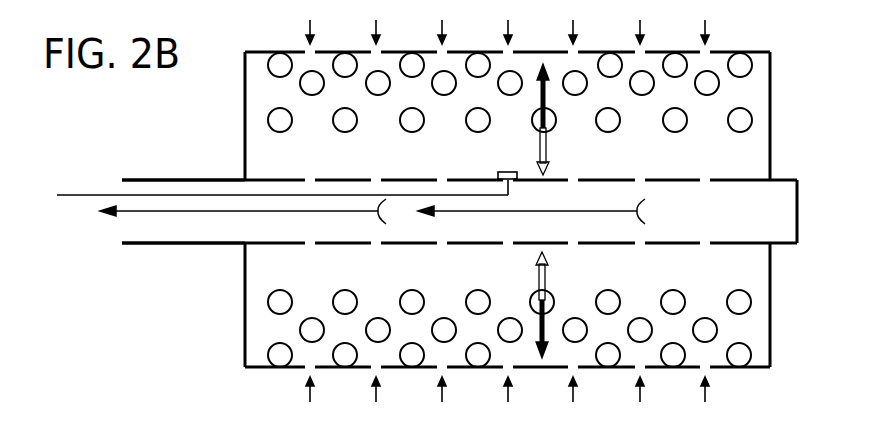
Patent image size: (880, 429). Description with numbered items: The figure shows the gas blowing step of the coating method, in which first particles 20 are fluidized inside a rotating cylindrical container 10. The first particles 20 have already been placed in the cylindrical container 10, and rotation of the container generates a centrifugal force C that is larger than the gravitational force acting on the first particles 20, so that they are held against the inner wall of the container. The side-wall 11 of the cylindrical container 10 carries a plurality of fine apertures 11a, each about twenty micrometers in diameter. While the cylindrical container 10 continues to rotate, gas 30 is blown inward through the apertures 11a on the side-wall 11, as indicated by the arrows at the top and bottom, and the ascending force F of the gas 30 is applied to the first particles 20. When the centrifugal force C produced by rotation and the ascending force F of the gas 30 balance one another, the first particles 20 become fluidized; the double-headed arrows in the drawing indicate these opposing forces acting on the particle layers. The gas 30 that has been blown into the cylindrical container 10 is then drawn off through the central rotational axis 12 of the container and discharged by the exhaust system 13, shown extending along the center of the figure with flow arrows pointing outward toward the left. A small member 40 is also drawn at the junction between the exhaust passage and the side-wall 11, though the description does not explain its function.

The cylindrical container 10 is at (770, 150).
The side-wall 11 is at (758, 52).
The fine apertures 11a is at (640, 51).
The central rotational axis 12 is at (738, 245).
The exhaust system 13 is at (148, 245).
The first particles 20 is at (720, 86).
The gas 30 is at (641, 43).
The stopper 40 is at (498, 172).
The centrifugal force C is at (541, 108).
The ascending force F is at (547, 151).